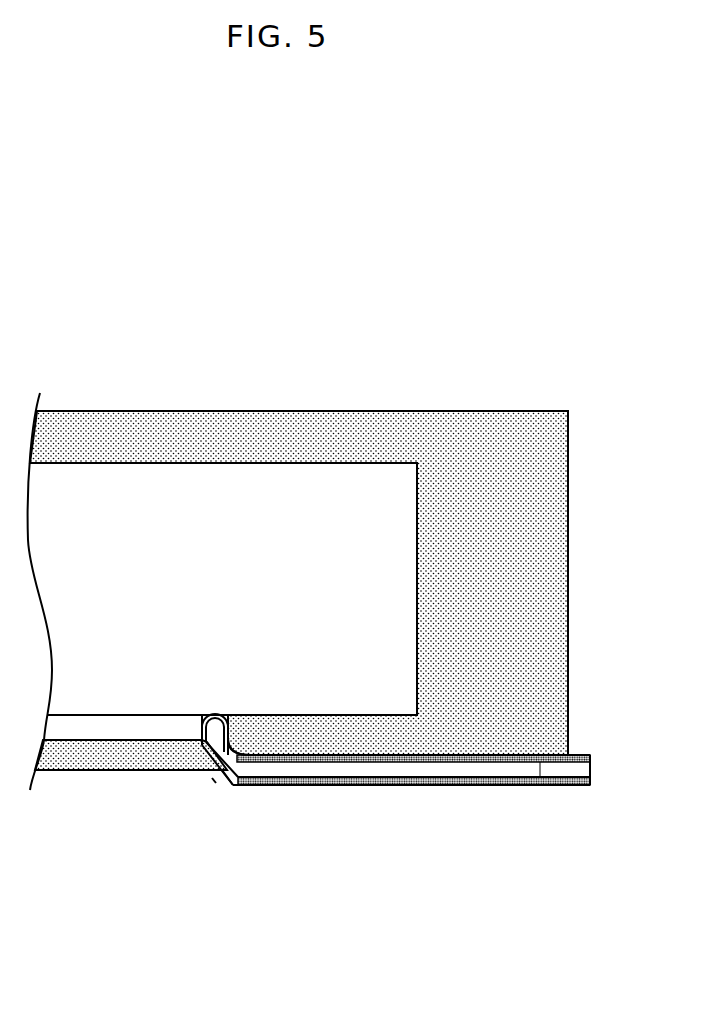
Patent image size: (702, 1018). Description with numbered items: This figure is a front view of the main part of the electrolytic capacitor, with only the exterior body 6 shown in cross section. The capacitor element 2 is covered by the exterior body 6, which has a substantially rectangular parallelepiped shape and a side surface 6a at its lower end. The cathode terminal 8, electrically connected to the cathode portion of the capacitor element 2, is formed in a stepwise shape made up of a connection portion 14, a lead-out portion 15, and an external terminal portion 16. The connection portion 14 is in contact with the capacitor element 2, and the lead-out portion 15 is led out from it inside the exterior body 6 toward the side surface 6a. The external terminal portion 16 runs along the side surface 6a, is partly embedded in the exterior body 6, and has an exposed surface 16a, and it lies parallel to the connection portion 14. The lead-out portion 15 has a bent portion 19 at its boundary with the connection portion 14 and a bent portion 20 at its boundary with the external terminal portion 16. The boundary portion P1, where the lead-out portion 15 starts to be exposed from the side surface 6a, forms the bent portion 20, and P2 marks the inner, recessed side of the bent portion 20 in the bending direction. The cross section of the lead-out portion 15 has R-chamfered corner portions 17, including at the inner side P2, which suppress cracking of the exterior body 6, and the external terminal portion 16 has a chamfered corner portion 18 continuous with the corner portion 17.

The capacitor element 2 is at (318, 510).
The exterior body 6 is at (478, 434).
The side surface of exterior body 6a is at (97, 781).
The cathode terminal 8 is at (565, 770).
The connection portion 14 is at (62, 727).
The lead-out portion 15 is at (217, 770).
The external terminal portion 16 is at (480, 772).
The exposed surface 16a is at (441, 788).
The chamfered shape corner portion 17 is at (239, 722).
The chamfered shape corner portion 18 is at (340, 762).
The bent portion 19 is at (202, 732).
The bent portion 20 is at (219, 785).
The boundary portion P1 is at (212, 781).
The inner side of bent portion P2 is at (247, 738).